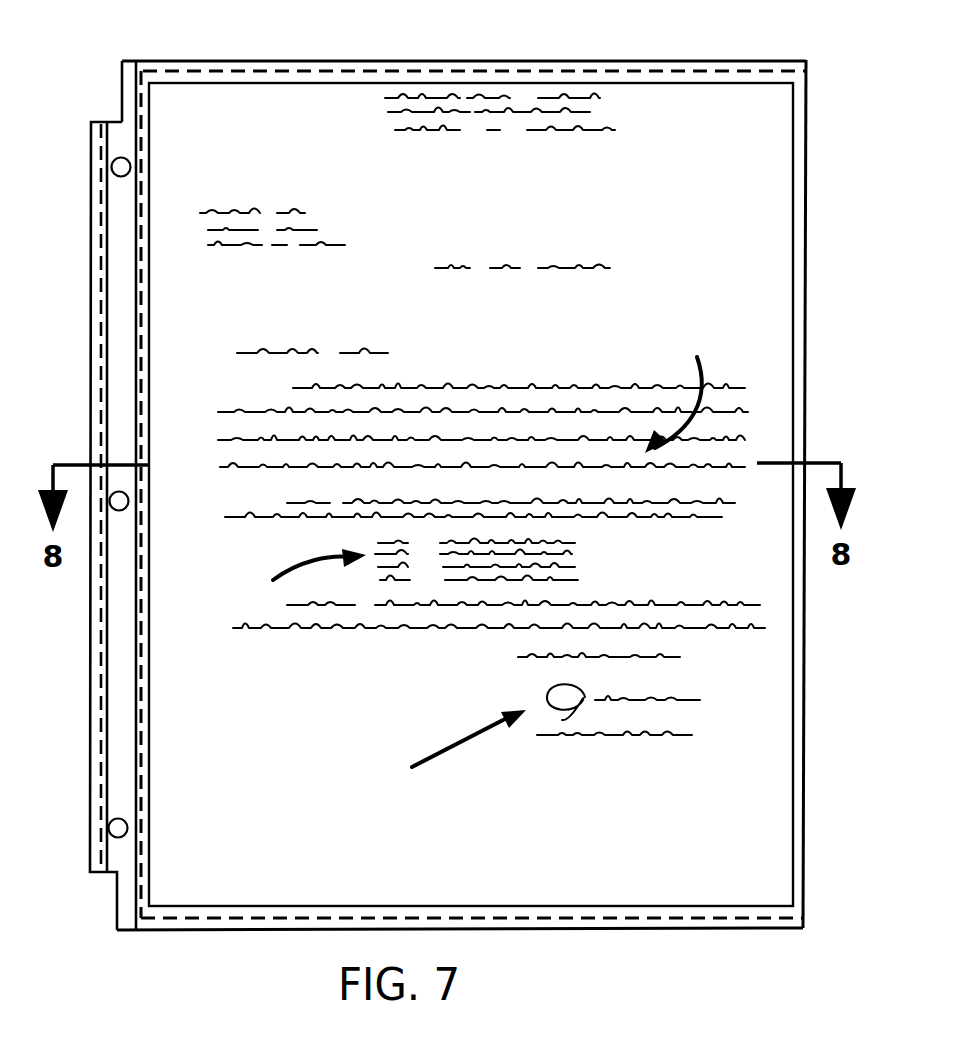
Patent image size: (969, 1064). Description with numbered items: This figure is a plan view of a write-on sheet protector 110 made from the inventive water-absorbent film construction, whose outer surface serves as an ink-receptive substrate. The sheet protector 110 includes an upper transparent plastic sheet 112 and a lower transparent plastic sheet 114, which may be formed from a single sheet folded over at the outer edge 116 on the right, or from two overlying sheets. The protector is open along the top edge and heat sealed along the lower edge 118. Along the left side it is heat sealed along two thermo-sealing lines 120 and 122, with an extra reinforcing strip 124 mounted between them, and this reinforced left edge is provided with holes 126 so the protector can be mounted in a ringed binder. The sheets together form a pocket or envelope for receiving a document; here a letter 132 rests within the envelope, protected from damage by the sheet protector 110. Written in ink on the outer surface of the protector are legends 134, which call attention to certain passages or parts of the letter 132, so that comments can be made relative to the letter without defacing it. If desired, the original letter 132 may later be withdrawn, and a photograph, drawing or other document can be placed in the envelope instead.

The write-on sheet protector 110 is at (725, 38).
The upper transparent plastic sheet 112 is at (482, 415).
The lower transparent plastic sheet 114 is at (498, 60).
The outer edge 116 is at (806, 392).
The lower edge 118 is at (540, 929).
The thermo-sealing line 120 is at (101, 275).
The thermo-sealing line 122 is at (148, 117).
The reinforcing strip 124 is at (117, 337).
The holes 126 is at (112, 170).
The letter 132 is at (316, 108).
The legends 134 is at (717, 290).